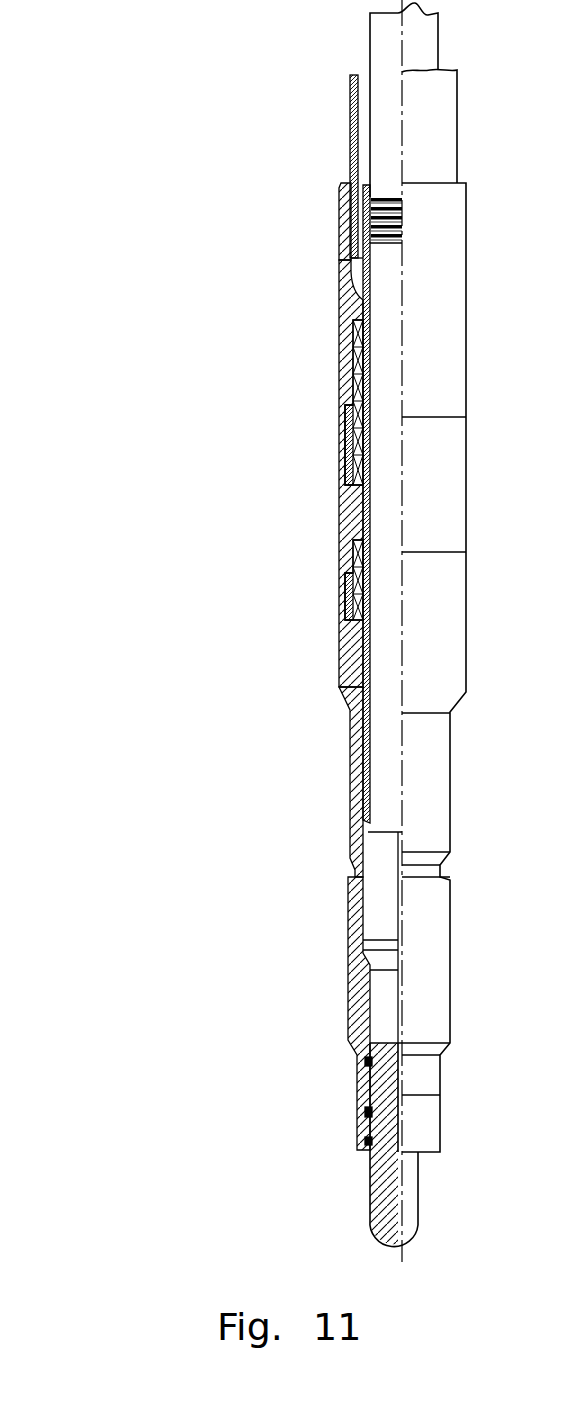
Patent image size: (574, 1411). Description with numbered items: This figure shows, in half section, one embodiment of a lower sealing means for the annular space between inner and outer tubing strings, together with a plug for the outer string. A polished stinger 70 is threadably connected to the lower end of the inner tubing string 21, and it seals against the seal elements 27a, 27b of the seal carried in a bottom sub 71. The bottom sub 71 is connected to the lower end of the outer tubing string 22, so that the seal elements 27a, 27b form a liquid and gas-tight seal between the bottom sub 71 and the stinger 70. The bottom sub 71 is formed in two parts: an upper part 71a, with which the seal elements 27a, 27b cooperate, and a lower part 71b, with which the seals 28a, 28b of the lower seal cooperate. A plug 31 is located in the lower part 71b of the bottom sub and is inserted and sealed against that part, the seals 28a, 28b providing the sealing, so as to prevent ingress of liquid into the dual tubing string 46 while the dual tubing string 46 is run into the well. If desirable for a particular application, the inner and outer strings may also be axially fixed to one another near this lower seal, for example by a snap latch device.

The inner tubing string 21 is at (380, 54).
The outer tubing string 22 is at (350, 105).
The upper part of bottom sub 71a is at (347, 253).
The bottom sub 71 is at (340, 298).
The seal element 27a is at (357, 368).
The seal element 27b is at (357, 575).
The dual tubing string 46 is at (442, 640).
The polished stinger 70 is at (365, 757).
The lower part of bottom sub 71b is at (350, 973).
The seal 28a is at (368, 1062).
The seal 28b is at (367, 1117).
The plug 31 is at (375, 1218).